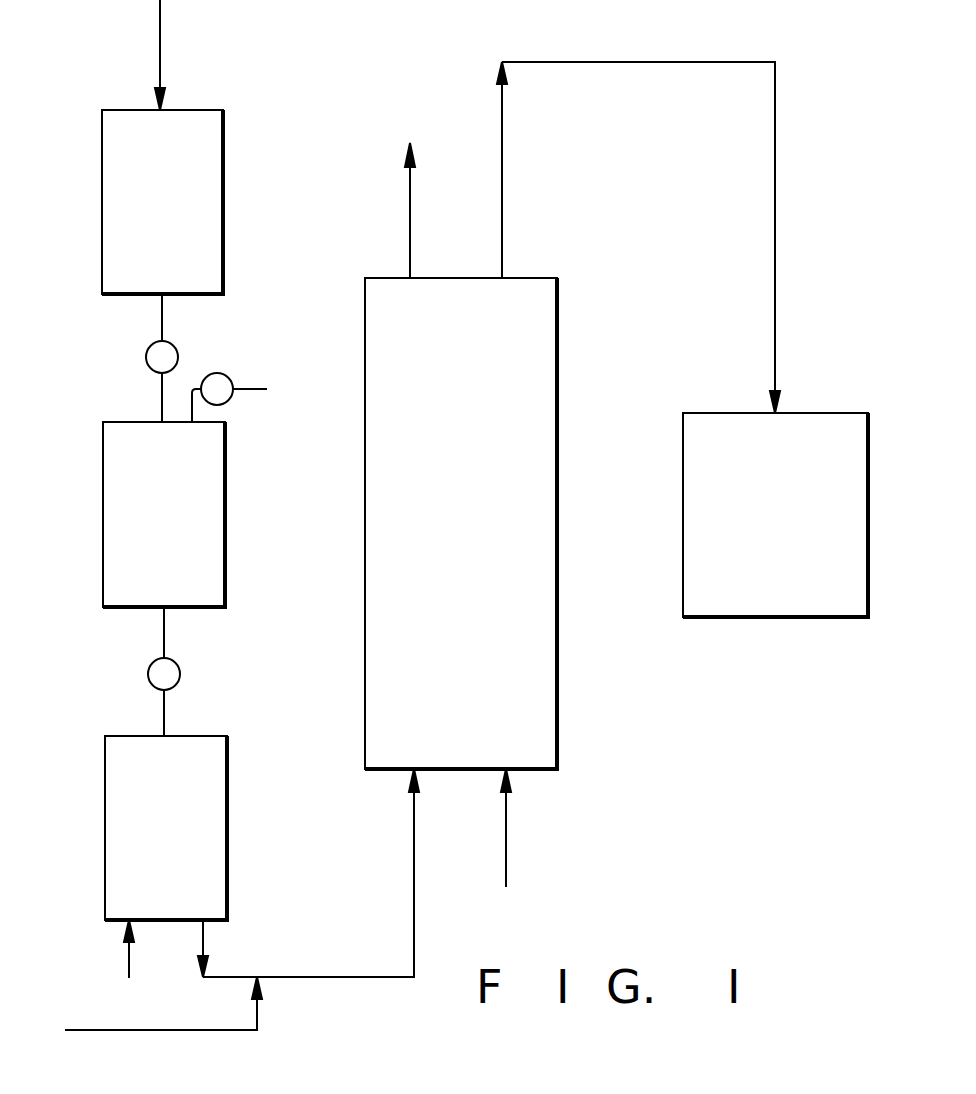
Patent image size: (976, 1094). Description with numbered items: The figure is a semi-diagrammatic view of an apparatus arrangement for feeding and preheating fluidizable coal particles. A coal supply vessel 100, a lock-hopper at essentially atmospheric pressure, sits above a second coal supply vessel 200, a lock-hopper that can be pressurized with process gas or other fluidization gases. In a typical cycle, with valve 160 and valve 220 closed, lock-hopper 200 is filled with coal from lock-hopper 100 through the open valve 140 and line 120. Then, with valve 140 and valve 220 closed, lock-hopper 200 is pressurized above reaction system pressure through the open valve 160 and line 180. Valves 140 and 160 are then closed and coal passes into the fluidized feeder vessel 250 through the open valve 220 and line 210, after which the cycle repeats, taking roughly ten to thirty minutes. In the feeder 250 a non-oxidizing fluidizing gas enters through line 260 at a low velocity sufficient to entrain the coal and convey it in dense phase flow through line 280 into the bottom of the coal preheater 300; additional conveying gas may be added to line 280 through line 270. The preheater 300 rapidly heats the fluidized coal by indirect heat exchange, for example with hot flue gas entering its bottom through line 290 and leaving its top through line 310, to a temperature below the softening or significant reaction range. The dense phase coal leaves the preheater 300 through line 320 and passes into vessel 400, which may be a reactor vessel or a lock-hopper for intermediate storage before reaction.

The coal supply vessel 100 is at (223, 218).
The line 120 is at (162, 308).
The valve 140 is at (147, 360).
The valve 160 is at (228, 376).
The line 180 is at (245, 390).
The coal supply vessel 200 is at (225, 528).
The line 210 is at (164, 635).
The valve 220 is at (180, 680).
The fluidized feeder vessel 250 is at (227, 793).
The line 260 is at (126, 955).
The line 270 is at (195, 1033).
The line 280 is at (307, 975).
The line 290 is at (508, 835).
The coal preheater 300 is at (557, 523).
The line 310 is at (409, 215).
The line 320 is at (658, 26).
The vessel 400 is at (683, 577).